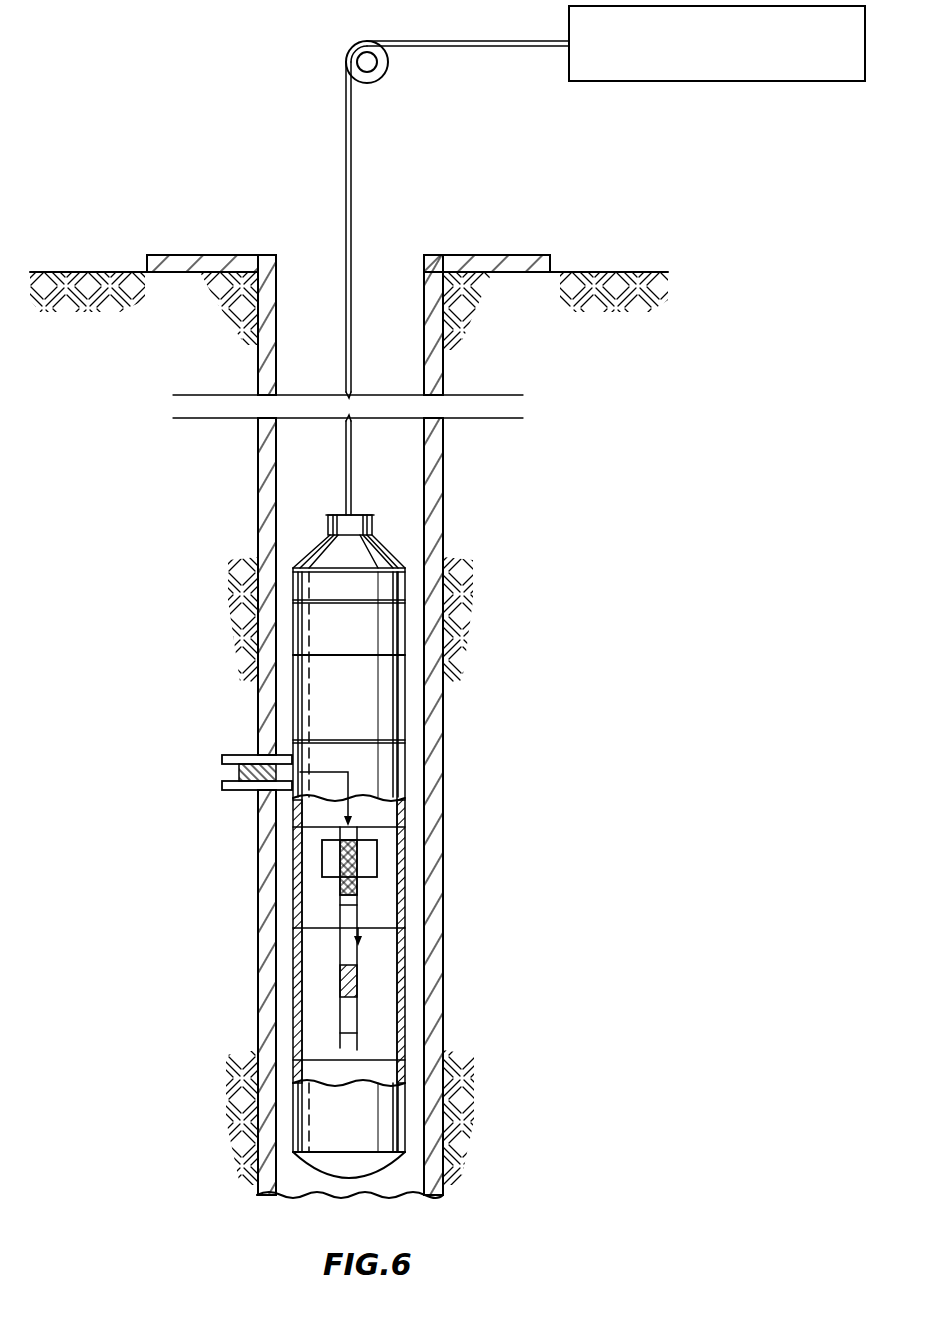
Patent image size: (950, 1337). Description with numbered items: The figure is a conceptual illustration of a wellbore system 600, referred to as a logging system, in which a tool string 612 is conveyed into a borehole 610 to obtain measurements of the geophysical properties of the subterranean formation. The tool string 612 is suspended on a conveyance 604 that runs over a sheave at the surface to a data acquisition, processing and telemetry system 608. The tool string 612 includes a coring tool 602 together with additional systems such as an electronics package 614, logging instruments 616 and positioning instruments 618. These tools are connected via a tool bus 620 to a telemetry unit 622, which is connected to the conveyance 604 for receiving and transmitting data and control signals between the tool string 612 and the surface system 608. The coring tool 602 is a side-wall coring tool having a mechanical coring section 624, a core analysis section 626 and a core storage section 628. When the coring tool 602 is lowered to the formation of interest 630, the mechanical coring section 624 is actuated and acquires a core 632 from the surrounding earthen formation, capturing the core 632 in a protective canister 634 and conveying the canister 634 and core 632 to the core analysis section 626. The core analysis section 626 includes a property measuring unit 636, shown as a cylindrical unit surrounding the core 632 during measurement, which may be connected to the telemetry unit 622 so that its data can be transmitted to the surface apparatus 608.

The wellbore system 600 is at (717, 306).
The coring tool 602 is at (408, 755).
The conveyance 604 is at (348, 137).
The data acquisition, processing and telemetry system 608 is at (758, 81).
The borehole 610 is at (423, 310).
The tool string 612 is at (408, 588).
The electronics package 614 is at (347, 627).
The logging instruments 616 is at (358, 688).
The positioning instruments 618 is at (355, 1115).
The tool bus 620 is at (308, 625).
The telemetry unit 622 is at (345, 585).
The mechanical coring section 624 is at (360, 778).
The core analysis section 626 is at (383, 898).
The core storage section 628 is at (387, 977).
The formation of interest 630 is at (222, 757).
The core 632 is at (222, 785).
The protective canister 634 is at (340, 888).
The property measuring unit 636 is at (330, 862).